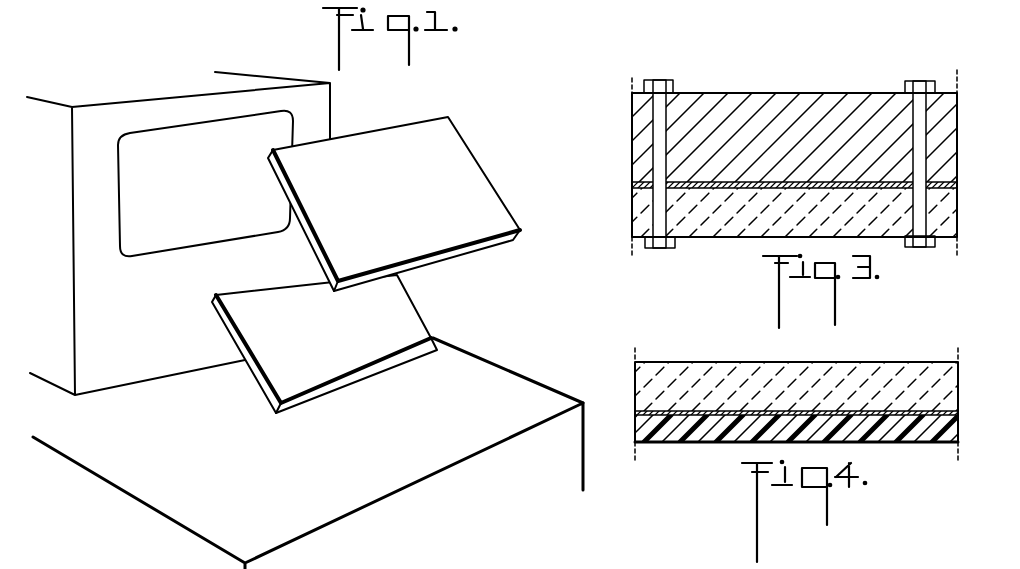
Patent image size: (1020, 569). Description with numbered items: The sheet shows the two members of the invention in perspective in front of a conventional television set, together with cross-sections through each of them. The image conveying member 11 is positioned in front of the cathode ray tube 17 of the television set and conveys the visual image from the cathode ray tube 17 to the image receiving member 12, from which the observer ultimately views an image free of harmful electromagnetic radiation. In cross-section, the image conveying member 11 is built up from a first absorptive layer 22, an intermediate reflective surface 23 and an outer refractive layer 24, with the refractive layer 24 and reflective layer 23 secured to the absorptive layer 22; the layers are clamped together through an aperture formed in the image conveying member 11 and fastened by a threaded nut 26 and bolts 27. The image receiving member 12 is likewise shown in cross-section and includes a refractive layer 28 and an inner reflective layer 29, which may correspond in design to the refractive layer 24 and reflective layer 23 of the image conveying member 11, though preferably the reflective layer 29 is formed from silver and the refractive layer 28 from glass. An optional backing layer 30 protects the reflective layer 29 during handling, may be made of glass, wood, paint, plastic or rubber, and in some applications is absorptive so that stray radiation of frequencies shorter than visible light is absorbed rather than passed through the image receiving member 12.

In FIG. 1, the image conveying member 11 is at (470, 173).
In FIG. 3, the image conveying member 11 is at (730, 76).
In FIG. 1, the image receiving member 12 is at (272, 395).
In FIG. 4, the image receiving member 12 is at (762, 318).
In FIG. 1, the cathode ray tube 17 is at (170, 245).
In FIG. 3, the first absorptive layer 22 is at (642, 108).
In FIG. 3, the intermediate reflective surface 23 is at (637, 185).
In FIG. 3, the outer refractive layer 24 is at (635, 226).
In FIG. 3, the threaded nut 26 is at (660, 140).
In FIG. 3, the bolt 27 is at (665, 83).
In FIG. 4, the refractive layer 28 is at (640, 428).
In FIG. 4, the inner reflective layer 29 is at (637, 412).
In FIG. 4, the backing layer 30 is at (637, 378).